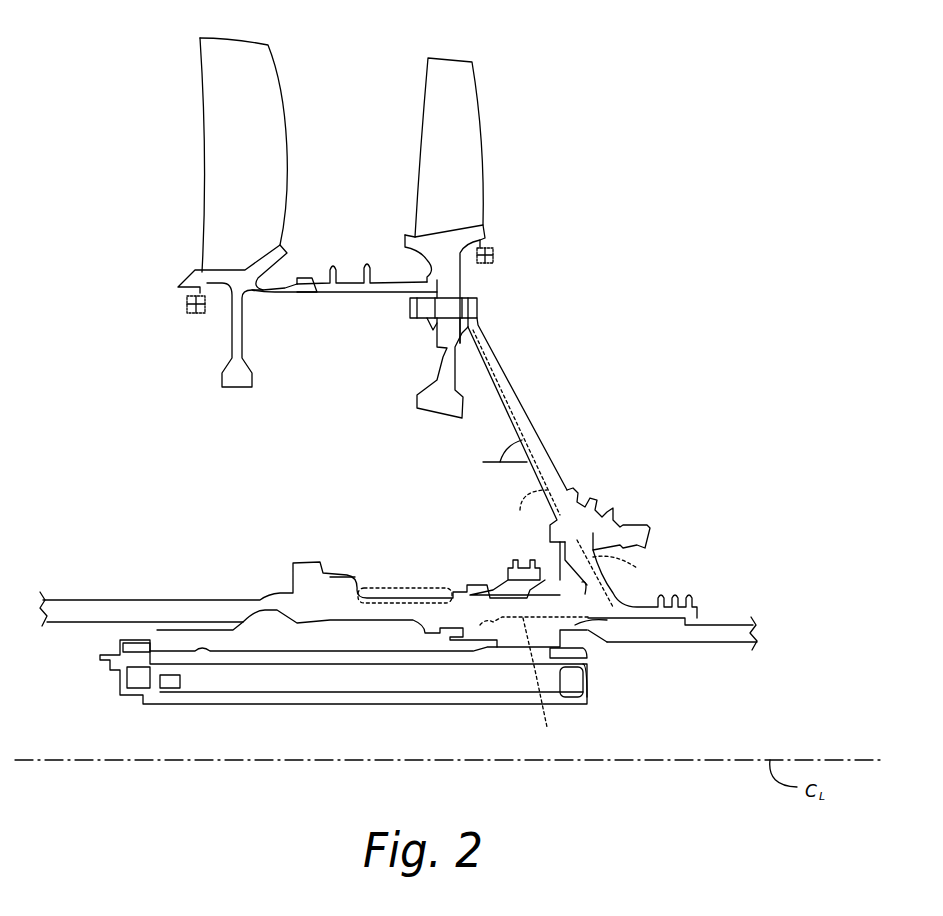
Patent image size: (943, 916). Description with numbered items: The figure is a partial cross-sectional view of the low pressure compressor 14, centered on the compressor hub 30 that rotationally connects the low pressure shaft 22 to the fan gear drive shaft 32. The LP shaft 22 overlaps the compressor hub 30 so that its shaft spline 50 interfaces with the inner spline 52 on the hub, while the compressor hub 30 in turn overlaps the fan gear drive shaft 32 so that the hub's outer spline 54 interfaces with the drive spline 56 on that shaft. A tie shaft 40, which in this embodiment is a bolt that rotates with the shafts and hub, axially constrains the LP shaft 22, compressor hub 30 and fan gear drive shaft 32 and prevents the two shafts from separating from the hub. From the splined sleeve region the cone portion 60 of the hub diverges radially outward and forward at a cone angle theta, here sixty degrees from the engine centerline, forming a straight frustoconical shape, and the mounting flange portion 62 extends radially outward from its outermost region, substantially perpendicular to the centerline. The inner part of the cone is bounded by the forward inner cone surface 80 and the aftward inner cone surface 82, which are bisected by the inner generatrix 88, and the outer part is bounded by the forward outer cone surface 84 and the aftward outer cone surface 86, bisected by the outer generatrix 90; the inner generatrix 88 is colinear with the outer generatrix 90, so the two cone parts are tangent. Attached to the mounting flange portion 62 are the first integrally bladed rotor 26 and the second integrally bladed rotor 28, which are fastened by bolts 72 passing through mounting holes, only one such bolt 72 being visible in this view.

The low pressure compressor 14 is at (573, 94).
The low pressure shaft 22 is at (680, 637).
The first integrally bladed rotor 26 is at (217, 160).
The second integrally bladed rotor 28 is at (435, 162).
The compressor hub 30 is at (572, 428).
The fan gear drive shaft 32 is at (355, 577).
The tie shaft 40 is at (245, 697).
The shaft spline 50 is at (539, 685).
The inner spline 52 is at (575, 627).
The outer spline 54 is at (440, 590).
The drive spline 56 is at (392, 600).
The cone portion 60 is at (500, 390).
The mounting flange portion 62 is at (478, 300).
The bolt 72 is at (477, 315).
The forward inner cone surface 80 is at (560, 555).
The aftward inner cone surface 82 is at (617, 592).
The forward outer cone surface 84 is at (505, 413).
The aftward outer cone surface 86 is at (528, 427).
The inner generatrix 88 is at (626, 573).
The outer generatrix 90 is at (523, 511).